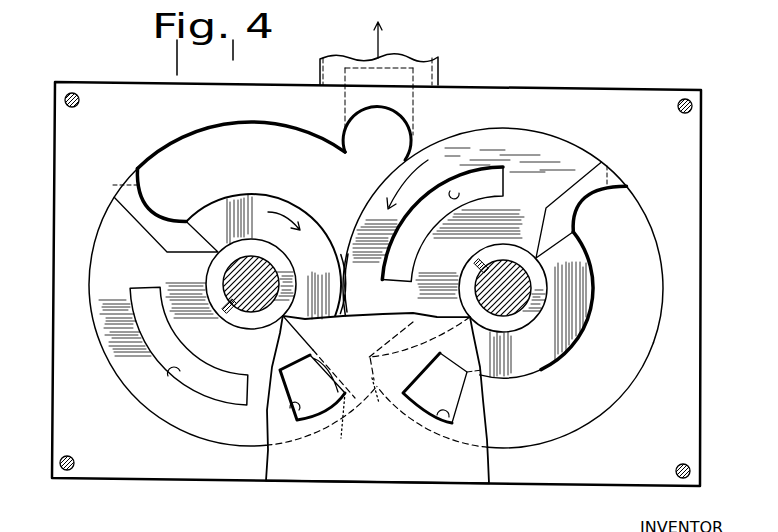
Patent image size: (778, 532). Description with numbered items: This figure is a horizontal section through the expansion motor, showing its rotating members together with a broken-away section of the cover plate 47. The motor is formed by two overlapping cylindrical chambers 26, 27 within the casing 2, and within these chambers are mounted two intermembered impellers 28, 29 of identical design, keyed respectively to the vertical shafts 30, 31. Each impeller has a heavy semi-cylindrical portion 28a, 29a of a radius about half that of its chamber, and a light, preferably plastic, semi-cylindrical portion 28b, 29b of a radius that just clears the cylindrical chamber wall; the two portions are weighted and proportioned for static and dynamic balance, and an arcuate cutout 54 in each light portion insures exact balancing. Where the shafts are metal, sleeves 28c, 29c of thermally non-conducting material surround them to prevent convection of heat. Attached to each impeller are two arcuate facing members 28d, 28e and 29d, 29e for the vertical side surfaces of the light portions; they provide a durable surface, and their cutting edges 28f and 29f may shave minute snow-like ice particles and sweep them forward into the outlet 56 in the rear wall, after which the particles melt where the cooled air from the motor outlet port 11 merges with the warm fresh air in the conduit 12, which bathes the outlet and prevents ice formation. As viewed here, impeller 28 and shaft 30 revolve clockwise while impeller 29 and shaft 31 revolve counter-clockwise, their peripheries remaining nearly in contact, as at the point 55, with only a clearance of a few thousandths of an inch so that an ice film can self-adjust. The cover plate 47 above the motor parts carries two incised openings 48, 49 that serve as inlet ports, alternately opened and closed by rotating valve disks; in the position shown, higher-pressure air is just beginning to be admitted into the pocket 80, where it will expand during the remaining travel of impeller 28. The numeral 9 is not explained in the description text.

The casing 2 is at (533, 97).
The mounting holes 9 is at (722, 107).
The motor outlet port 11 is at (389, 62).
The conduit 12 is at (440, 72).
The cylindrical chamber 26 is at (280, 171).
The cylindrical chamber 27 is at (602, 388).
The impeller 28 is at (126, 258).
The semi-cylindrical portion 28a is at (306, 232).
The semi-cylindrical portion 28b is at (224, 338).
The sleeve 28c is at (278, 278).
The facing member 28d is at (140, 200).
The facing member 28e is at (336, 427).
The cutting edge 28f is at (143, 168).
The impeller 29 is at (545, 155).
The semi-cylindrical portion 29a is at (538, 357).
The semi-cylindrical portion 29b is at (485, 261).
The sleeve 29c is at (534, 285).
The facing member 29d is at (592, 174).
The facing member 29e is at (384, 410).
The cutting edge 29f is at (618, 182).
The vertical shaft 30 is at (250, 262).
The vertical shaft 31 is at (505, 261).
The cover plate 47 is at (426, 464).
The incised opening 48 is at (293, 411).
The incised opening 49 is at (444, 426).
The arcuate cutout 54 is at (455, 194).
The point of near contact 55 is at (346, 250).
The outlet 56 is at (390, 140).
The pocket 80 is at (350, 363).